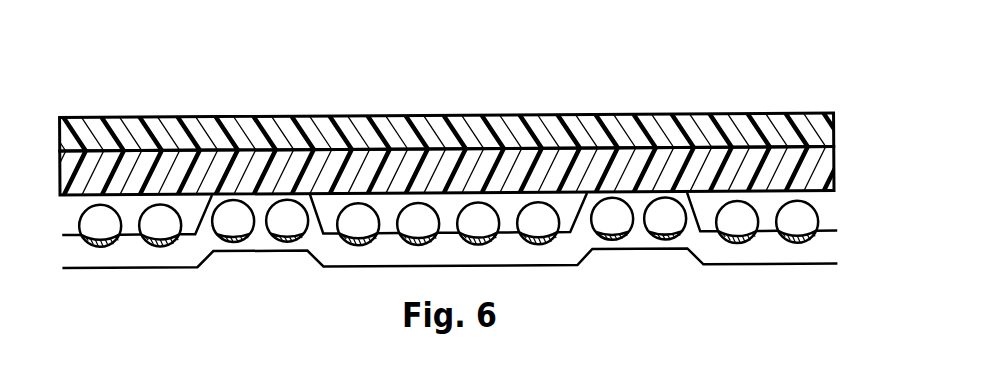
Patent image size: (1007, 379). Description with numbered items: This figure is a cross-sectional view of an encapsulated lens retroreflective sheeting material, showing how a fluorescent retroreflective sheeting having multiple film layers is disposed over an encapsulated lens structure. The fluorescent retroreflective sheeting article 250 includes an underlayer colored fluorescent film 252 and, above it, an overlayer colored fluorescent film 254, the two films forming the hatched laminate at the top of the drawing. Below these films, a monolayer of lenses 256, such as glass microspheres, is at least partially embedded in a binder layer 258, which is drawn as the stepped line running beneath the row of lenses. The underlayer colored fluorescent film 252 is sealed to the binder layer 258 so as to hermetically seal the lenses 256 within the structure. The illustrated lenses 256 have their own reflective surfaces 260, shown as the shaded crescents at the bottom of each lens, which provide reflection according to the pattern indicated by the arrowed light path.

The fluorescent retroreflective sheeting article 250 is at (464, 176).
The underlayer colored fluorescent film 252 is at (60, 168).
The overlayer colored fluorescent film 254 is at (577, 113).
The lenses 256 is at (287, 223).
The binder layer 258 is at (513, 250).
The reflective surfaces 260 is at (652, 235).